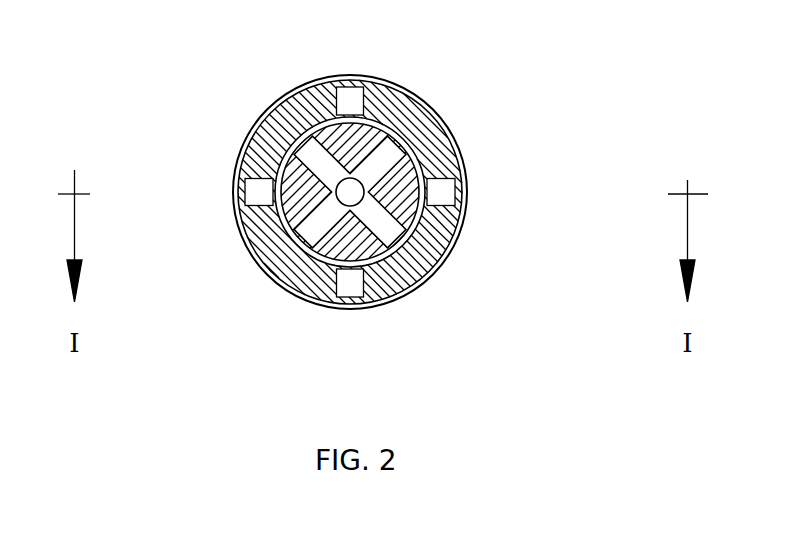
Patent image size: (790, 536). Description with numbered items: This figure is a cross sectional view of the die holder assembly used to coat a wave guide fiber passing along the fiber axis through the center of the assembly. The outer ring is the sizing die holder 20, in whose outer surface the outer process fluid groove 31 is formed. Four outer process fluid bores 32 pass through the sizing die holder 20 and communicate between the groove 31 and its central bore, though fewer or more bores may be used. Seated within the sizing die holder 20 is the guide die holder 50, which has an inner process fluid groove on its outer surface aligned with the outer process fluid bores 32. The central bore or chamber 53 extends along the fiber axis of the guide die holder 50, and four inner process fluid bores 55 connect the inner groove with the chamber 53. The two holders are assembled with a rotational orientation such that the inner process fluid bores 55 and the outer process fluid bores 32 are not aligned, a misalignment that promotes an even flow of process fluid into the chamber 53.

The sizing die holder 20 is at (442, 250).
The outer process fluid groove 31 is at (453, 232).
The outer process fluid bores 32 is at (447, 183).
The guide die holder 50 is at (423, 157).
The central bore or chamber 53 is at (356, 199).
The inner process fluid bores 55 is at (386, 155).